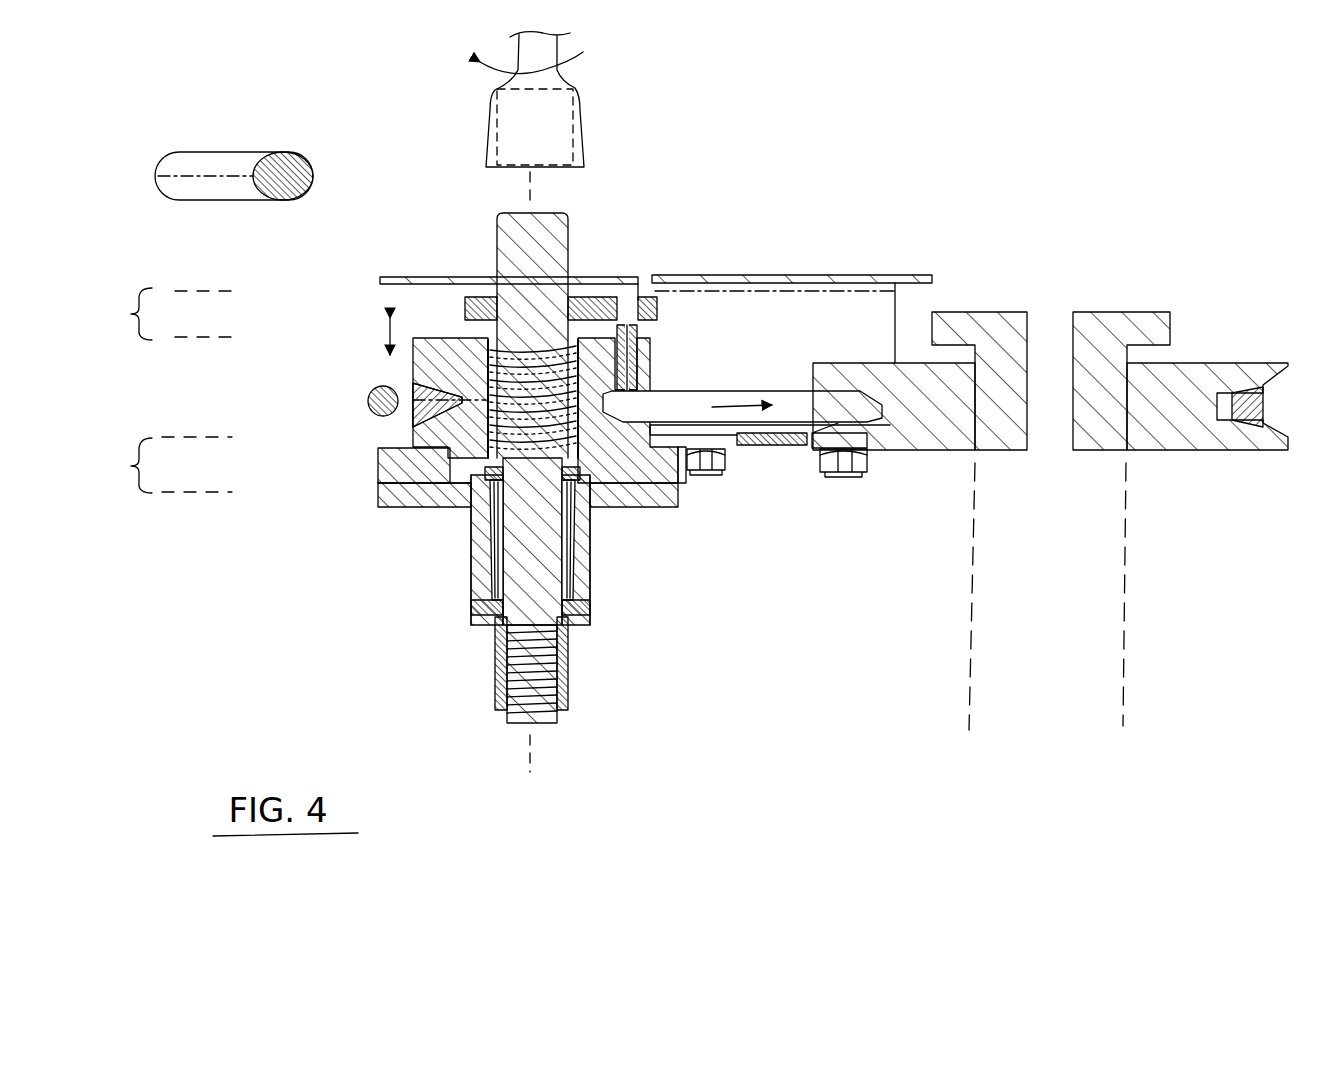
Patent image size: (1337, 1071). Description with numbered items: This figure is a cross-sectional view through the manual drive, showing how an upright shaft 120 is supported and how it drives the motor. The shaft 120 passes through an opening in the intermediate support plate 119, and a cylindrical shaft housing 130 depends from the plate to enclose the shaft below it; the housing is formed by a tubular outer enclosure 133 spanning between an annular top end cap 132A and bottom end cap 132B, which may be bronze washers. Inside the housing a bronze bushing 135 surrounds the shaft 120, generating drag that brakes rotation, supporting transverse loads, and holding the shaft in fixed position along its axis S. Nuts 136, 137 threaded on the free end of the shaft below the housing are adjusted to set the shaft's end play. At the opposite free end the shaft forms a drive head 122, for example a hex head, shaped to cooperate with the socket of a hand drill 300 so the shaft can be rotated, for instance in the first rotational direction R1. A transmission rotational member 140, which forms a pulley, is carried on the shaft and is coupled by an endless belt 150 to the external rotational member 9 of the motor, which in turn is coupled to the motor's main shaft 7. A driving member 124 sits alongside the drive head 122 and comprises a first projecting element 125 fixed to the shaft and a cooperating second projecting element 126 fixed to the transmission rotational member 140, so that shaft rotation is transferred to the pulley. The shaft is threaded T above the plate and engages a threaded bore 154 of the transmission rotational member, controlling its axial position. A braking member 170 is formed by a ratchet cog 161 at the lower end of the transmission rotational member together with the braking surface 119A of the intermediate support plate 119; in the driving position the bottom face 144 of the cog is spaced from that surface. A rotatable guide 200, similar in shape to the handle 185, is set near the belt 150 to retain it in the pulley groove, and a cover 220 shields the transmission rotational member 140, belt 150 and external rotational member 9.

The main shaft 7 is at (1125, 593).
The external rotational member 9 is at (1200, 375).
The intermediate support plate 119 is at (402, 506).
The surface of the intermediate support plate 119A is at (416, 478).
The shaft 120 is at (526, 705).
The drive head 122 is at (552, 250).
The driving member 124 is at (159, 314).
The first projecting element 125 is at (658, 308).
The second projecting element 126 is at (640, 332).
The shaft housing 130 is at (594, 537).
The top end cap 132A is at (485, 475).
The bottom end cap 132B is at (590, 605).
The tubular outer enclosure 133 is at (598, 566).
The bushing 135 is at (492, 541).
The nut 136 is at (560, 650).
The nut 137 is at (560, 690).
The transmission rotational member 140 is at (432, 346).
The bottom face of the ratchet cog 144 is at (682, 490).
The endless belt 150 is at (800, 385).
The bore 154 is at (584, 372).
The ratchet cog 161 is at (386, 464).
The braking member 170 is at (155, 465).
The handle 185 is at (210, 152).
The rotatable guide 200 is at (366, 402).
The cover 220 is at (890, 275).
The hand drill 300 is at (590, 92).
The first rotational direction R1 is at (572, 52).
The axis S is at (534, 197).
The threaded portion T is at (515, 338).